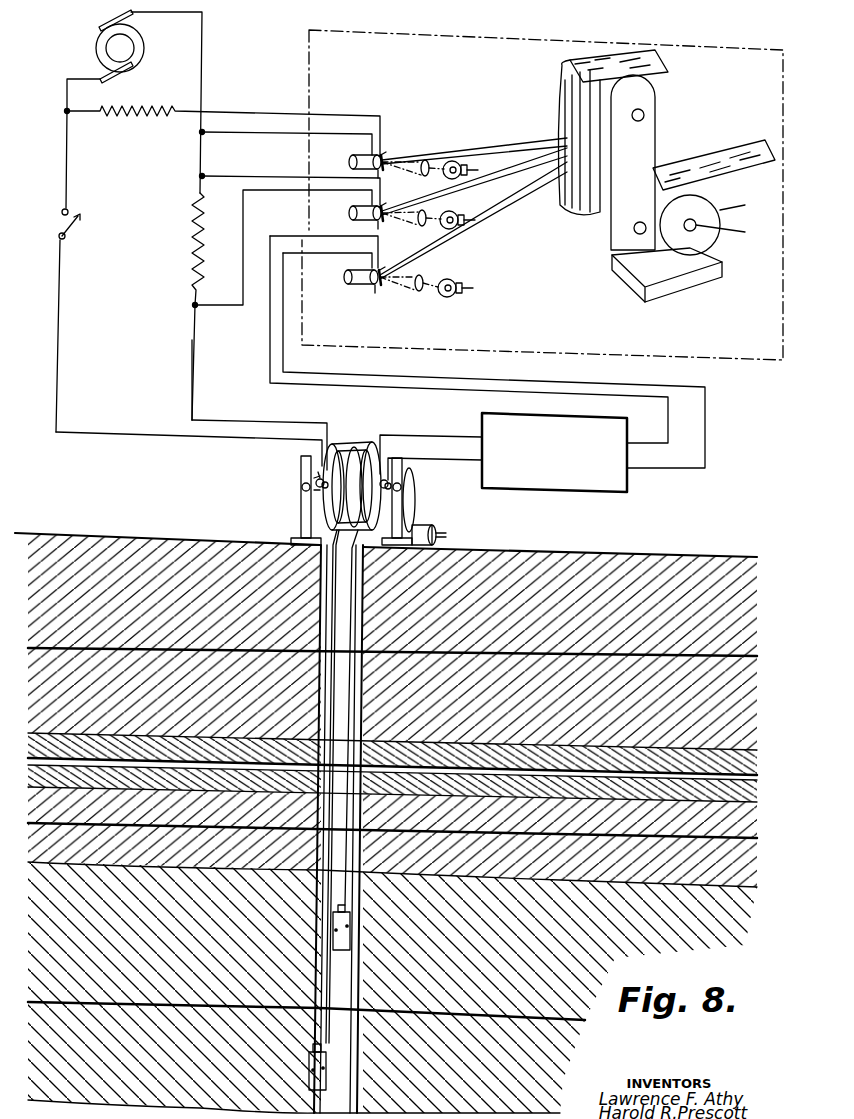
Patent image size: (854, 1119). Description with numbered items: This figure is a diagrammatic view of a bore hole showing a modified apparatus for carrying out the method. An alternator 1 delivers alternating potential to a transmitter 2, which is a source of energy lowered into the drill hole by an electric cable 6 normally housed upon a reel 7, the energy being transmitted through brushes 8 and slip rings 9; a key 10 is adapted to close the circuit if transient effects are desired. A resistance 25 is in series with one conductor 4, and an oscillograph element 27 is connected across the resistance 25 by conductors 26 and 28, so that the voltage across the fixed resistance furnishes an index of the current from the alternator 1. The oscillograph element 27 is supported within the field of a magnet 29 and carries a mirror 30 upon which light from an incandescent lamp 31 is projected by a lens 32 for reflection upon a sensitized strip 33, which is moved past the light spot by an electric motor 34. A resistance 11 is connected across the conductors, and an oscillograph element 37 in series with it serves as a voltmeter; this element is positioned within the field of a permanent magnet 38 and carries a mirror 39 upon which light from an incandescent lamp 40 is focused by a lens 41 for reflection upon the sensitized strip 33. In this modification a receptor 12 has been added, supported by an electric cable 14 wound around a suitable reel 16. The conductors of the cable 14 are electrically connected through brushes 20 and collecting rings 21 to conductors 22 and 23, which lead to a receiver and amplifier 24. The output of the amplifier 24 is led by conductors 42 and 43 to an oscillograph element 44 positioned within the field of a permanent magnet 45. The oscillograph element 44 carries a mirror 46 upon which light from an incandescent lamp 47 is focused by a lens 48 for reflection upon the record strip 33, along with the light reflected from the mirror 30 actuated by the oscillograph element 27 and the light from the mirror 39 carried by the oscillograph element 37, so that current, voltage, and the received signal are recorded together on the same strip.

The alternator 1 is at (144, 48).
The transmitter 2 is at (326, 1076).
The conductor 4 is at (193, 372).
The electric cable 6 is at (330, 530).
The reel 7 is at (330, 470).
The brushes 8 is at (318, 478).
The slip rings 9 is at (304, 496).
The key 10 is at (81, 222).
The resistance 11 is at (133, 116).
The receptor 12 is at (343, 951).
The electric cable 14 is at (355, 577).
The reel 16 is at (378, 445).
The brushes 20 is at (395, 480).
The collecting rings 21 is at (412, 513).
The conductor 22 is at (446, 459).
The conductor 23 is at (437, 435).
The receiver and amplifier 24 is at (560, 492).
The resistance 25 is at (190, 224).
The conductor 26 is at (247, 177).
The oscillograph element 27 is at (385, 218).
The conductor 28 is at (216, 304).
The magnet 29 is at (353, 213).
The mirror 30 is at (385, 212).
The incandescent lamp 31 is at (465, 223).
The lens 32 is at (452, 212).
The sensitized strip 33 is at (656, 76).
The electric motor 34 is at (702, 221).
The oscillograph element 37 is at (386, 166).
The permanent magnet 38 is at (353, 162).
The mirror 39 is at (385, 161).
The incandescent lamp 40 is at (468, 166).
The lens 41 is at (428, 162).
The conductor 42 is at (655, 469).
The conductor 43 is at (663, 444).
The oscillograph element 44 is at (382, 284).
The permanent magnet 45 is at (362, 289).
The mirror 46 is at (384, 270).
The incandescent lamp 47 is at (461, 286).
The lens 48 is at (427, 281).